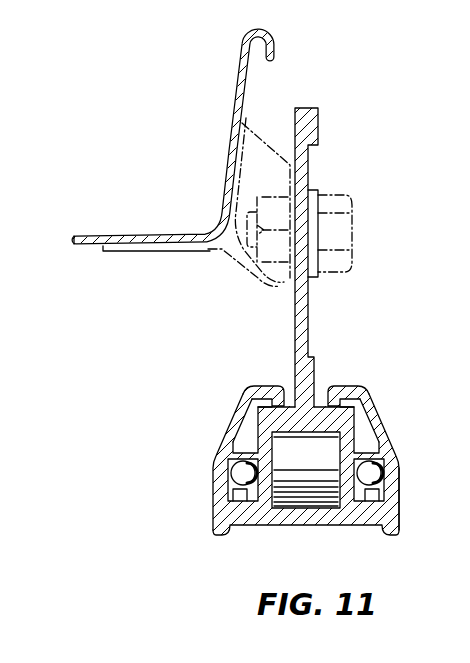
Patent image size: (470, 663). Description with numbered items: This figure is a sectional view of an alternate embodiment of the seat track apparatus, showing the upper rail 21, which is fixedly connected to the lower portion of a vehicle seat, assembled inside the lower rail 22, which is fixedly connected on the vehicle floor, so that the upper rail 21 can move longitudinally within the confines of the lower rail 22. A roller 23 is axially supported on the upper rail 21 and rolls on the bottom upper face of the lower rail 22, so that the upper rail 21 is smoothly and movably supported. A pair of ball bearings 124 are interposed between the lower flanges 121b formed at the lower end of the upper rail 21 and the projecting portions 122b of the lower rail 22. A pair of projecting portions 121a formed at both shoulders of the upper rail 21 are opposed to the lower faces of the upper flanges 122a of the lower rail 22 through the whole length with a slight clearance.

The upper rail 21 is at (322, 392).
The lower rail 22 is at (333, 516).
The roller 23 is at (304, 492).
The projecting portion 121a is at (243, 400).
The lower flange 121b is at (245, 503).
The upper flange 122a is at (282, 386).
The projecting portion 122b is at (236, 451).
The ball bearing 124 is at (240, 474).